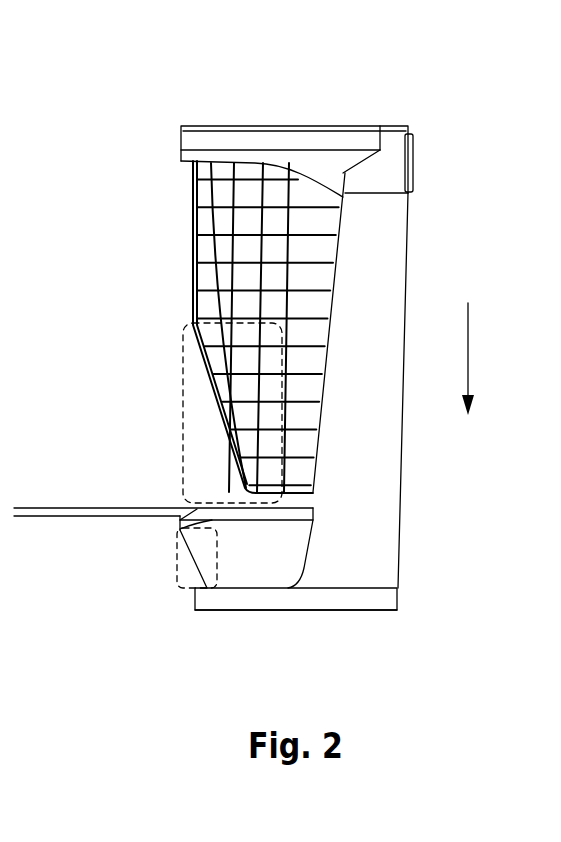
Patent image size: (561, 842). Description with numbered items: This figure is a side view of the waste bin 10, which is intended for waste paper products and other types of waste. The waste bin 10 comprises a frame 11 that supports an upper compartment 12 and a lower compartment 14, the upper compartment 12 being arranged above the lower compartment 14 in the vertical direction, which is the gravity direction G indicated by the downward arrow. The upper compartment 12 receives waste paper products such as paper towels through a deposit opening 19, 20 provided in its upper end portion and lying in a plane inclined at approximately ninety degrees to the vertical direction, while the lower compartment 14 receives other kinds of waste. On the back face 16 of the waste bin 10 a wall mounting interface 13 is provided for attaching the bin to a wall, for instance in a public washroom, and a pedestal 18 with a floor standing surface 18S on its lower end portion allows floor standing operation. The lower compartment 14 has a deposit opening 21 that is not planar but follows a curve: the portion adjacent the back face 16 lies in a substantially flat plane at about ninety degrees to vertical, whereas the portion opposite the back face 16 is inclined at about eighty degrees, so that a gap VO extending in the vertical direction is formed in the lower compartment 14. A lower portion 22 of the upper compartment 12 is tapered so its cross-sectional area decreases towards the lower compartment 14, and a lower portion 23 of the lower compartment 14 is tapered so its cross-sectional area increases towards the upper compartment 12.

The waste bin 10 is at (440, 94).
The frame 11 is at (382, 232).
The upper compartment 12 is at (190, 230).
The wall mounting interface 13 is at (413, 165).
The lower compartment 14 is at (278, 572).
The back face 16 is at (401, 463).
The pedestal 18 is at (382, 600).
The floor standing surface 18S is at (258, 612).
The deposit opening of the upper compartment 19 is at (282, 100).
The upper edge 20 is at (293, 140).
The deposit opening of the lower compartment 21 is at (214, 489).
The lower portion of the upper compartment 22 is at (182, 389).
The lower portion of the lower compartment 23 is at (177, 547).
The gap VO is at (25, 550).
The gravity direction G is at (470, 349).